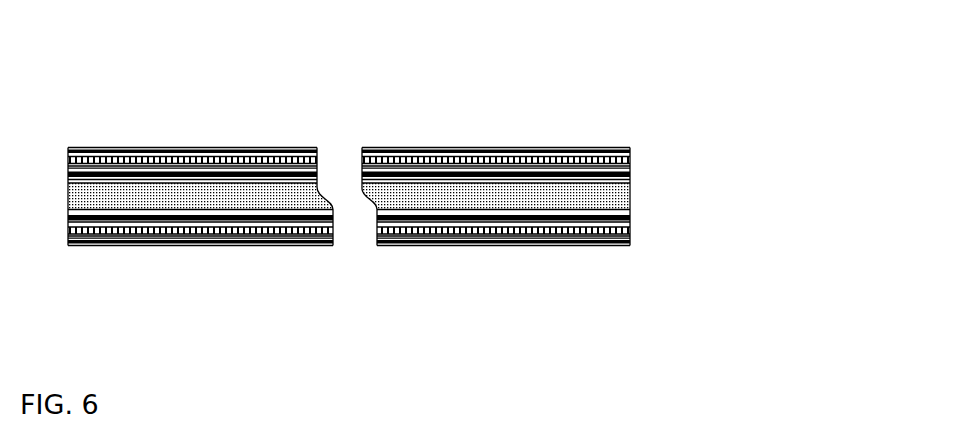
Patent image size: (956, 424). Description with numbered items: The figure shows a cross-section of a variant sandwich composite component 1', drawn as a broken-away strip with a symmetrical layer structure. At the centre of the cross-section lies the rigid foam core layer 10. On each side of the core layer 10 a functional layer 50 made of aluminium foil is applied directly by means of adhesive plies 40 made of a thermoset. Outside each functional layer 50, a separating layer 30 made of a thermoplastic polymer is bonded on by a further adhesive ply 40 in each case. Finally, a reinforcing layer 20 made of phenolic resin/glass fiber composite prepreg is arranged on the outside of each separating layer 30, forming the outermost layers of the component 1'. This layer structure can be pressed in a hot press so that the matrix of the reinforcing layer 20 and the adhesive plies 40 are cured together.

The sandwich composite component 1' is at (394, 160).
The rigid foam core layer 10 is at (617, 197).
The reinforcing layer 20 is at (632, 148).
The separating layer 30 is at (632, 153).
The adhesive ply 40 is at (632, 160).
The functional layer 50 is at (632, 167).